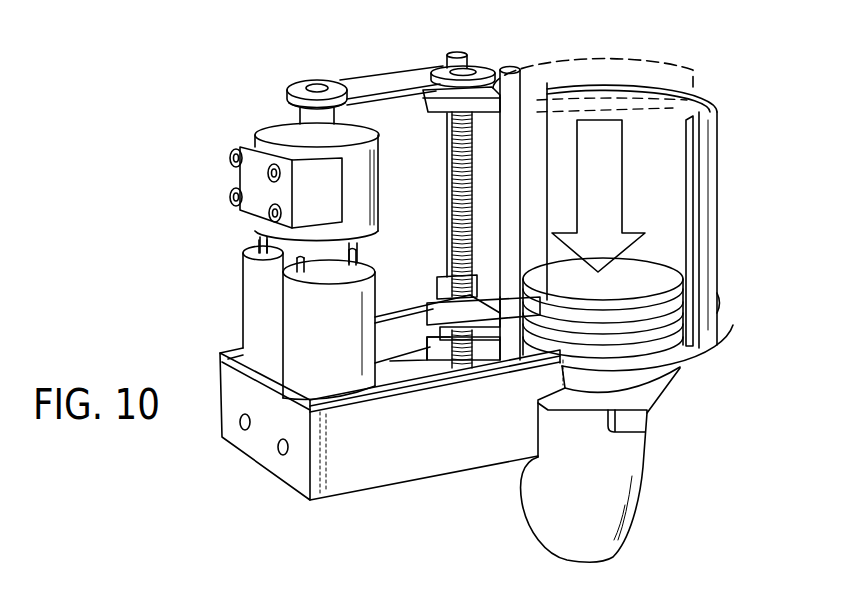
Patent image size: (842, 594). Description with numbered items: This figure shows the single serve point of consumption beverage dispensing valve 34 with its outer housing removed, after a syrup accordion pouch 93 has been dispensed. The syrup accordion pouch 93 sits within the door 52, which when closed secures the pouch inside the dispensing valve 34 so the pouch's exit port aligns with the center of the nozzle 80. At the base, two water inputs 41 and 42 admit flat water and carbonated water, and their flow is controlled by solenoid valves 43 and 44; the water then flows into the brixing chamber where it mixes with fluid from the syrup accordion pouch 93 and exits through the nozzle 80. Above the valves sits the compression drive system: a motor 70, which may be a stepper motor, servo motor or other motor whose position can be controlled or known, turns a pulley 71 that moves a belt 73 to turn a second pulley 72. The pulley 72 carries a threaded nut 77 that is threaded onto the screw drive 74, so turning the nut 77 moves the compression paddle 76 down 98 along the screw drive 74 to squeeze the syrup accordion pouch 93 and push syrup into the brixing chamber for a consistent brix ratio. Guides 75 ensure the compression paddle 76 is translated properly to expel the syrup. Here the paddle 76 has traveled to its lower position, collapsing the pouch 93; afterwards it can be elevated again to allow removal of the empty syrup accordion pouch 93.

The single serve point of consumption beverage dispensing valve 34 is at (153, 172).
The water input 41 is at (240, 418).
The water input 42 is at (280, 453).
The solenoid valve 43 is at (243, 283).
The solenoid valve 44 is at (282, 313).
The door 52 is at (718, 187).
The motor 70 is at (270, 120).
The pulley 71 is at (328, 82).
The pulley 72 is at (440, 70).
The belt 73 is at (375, 103).
The screw drive 74 is at (453, 262).
The guides 75 is at (448, 227).
The compression paddle 76 is at (667, 293).
The threaded nut 77 is at (440, 293).
The nozzle 80 is at (523, 502).
The syrup accordion pouch 93 is at (670, 337).
The down 98 is at (623, 168).